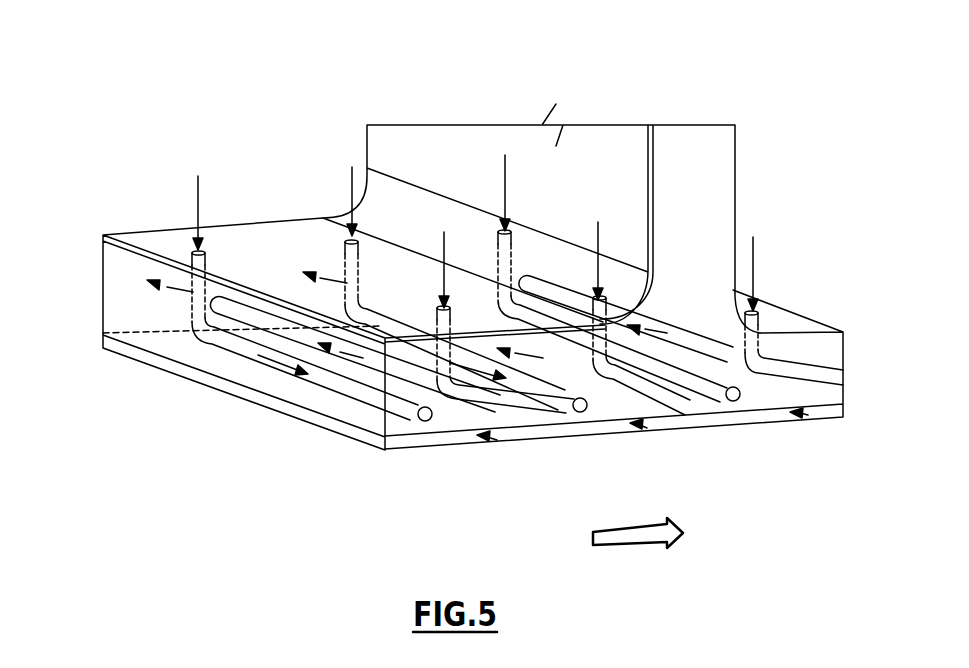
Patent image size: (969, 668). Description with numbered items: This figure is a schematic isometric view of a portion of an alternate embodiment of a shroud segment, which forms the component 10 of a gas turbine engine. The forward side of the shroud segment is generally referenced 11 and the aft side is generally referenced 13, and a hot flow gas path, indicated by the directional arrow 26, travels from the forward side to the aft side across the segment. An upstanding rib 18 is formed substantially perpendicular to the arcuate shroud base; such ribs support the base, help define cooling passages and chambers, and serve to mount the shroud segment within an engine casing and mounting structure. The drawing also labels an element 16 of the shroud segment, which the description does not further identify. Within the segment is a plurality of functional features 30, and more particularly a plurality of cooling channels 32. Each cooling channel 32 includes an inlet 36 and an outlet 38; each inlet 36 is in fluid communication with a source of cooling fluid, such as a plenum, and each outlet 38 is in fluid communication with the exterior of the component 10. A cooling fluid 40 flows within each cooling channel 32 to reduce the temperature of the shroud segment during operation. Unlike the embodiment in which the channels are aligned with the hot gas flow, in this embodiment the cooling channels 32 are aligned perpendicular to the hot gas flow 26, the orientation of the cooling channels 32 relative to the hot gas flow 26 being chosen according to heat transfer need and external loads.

The component 10 is at (721, 75).
The forward of the shroud segment 11 is at (62, 301).
The aft of the shroud segment 13 is at (886, 269).
The plate body 16 is at (123, 308).
The upstanding rib 18 is at (388, 133).
The directional arrow of hot gas flow 26 is at (627, 544).
The functional features 30 is at (522, 369).
The cooling channels 32 is at (223, 343).
The inlet 36 is at (180, 240).
The outlet 38 is at (430, 430).
The cooling fluid 40 is at (350, 178).